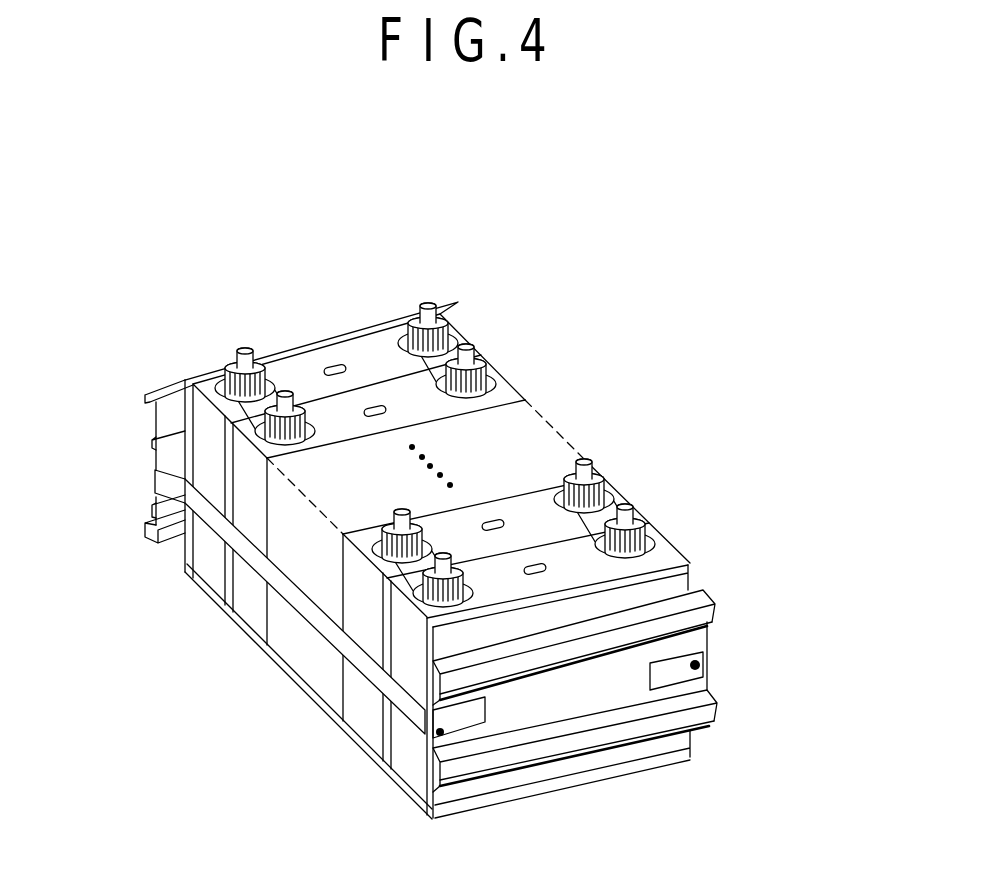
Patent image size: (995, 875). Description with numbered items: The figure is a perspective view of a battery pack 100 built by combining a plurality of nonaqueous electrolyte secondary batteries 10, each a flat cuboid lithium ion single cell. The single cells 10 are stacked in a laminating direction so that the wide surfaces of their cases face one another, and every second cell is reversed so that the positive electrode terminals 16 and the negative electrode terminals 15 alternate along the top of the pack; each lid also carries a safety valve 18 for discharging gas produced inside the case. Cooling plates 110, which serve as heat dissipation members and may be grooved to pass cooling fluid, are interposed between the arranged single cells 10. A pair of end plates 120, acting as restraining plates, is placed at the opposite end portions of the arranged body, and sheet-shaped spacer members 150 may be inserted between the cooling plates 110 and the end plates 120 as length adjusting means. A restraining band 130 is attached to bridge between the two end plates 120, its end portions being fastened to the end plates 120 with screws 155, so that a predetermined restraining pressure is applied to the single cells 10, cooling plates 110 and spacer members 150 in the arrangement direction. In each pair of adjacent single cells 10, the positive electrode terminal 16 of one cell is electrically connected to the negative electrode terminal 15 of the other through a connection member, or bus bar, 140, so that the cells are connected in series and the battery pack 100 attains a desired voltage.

The nonaqueous electrolyte secondary battery 10 is at (363, 358).
The negative electrode terminal 15 is at (287, 396).
The positive electrode terminal 16 is at (245, 351).
The safety valve 18 is at (336, 362).
The battery pack 100 is at (730, 338).
The cooling plate 110 is at (224, 607).
The end plate 120 is at (145, 399).
The restraining band 130 is at (378, 680).
The connection member (bus bar) 140 is at (277, 372).
The spacer member 150 is at (682, 580).
The screw 155 is at (701, 664).